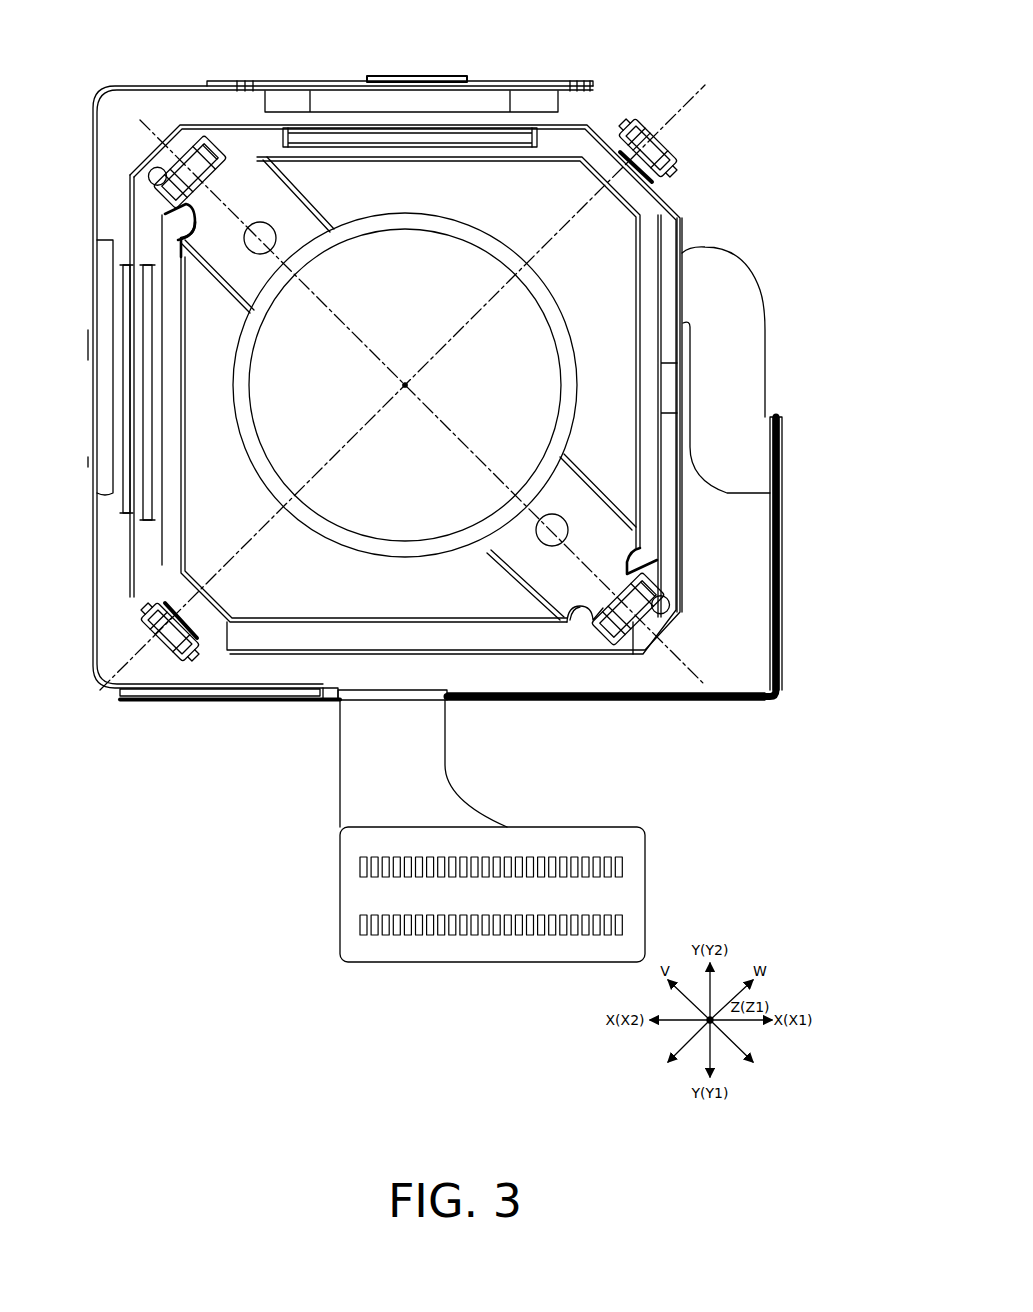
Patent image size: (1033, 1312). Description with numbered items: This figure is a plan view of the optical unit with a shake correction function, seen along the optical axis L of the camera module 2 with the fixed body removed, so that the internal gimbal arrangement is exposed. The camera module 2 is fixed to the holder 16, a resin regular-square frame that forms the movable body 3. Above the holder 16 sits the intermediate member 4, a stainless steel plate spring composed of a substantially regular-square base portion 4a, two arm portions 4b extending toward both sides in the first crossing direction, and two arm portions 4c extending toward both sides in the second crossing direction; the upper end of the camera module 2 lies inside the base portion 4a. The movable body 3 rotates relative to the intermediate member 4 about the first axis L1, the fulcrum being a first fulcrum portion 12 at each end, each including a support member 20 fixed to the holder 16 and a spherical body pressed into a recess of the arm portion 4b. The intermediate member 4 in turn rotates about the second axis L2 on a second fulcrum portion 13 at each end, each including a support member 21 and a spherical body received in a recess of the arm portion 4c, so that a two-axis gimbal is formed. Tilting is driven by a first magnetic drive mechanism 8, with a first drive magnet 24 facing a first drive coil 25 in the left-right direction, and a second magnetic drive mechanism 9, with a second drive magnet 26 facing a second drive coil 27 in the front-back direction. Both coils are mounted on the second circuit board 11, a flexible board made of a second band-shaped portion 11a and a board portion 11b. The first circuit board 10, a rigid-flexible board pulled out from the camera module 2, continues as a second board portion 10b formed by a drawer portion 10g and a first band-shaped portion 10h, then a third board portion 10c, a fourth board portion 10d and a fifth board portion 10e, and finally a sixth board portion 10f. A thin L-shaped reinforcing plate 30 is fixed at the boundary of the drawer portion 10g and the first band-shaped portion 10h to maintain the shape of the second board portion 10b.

The camera module 2 is at (405, 362).
The movable body 3 is at (410, 212).
The intermediate member 4 is at (405, 351).
The base portion 4a is at (587, 124).
The arm portion 4b is at (222, 180).
The arm portion 4c is at (667, 180).
The first magnetic drive mechanism 8 is at (172, 468).
The second magnetic drive mechanism 9 is at (500, 60).
The first circuit board 10 is at (463, 620).
The second board portion 10b is at (611, 583).
The third board portion 10c is at (383, 703).
The fourth board portion 10d is at (167, 703).
The fifth board portion 10e is at (340, 797).
The sixth board portion 10f is at (441, 962).
The drawer portion 10g is at (740, 283).
The first band-shaped portion 10h is at (645, 703).
The second circuit board 11 is at (369, 65).
The second band-shaped portion 11a is at (215, 86).
The board portion 11b is at (287, 689).
The first fulcrum portion 12 is at (150, 174).
The second fulcrum portion 13 is at (427, 385).
The holder 16 is at (681, 537).
The support member 20 is at (165, 142).
The support member 21 is at (679, 160).
The first drive magnet 24 is at (143, 322).
The first drive coil 25 is at (118, 405).
The second drive magnet 26 is at (348, 126).
The second drive coil 27 is at (287, 91).
The reinforcing plate 30 is at (781, 450).
The optical axis L is at (407, 381).
The first axis L1 is at (697, 680).
The second axis L2 is at (703, 90).